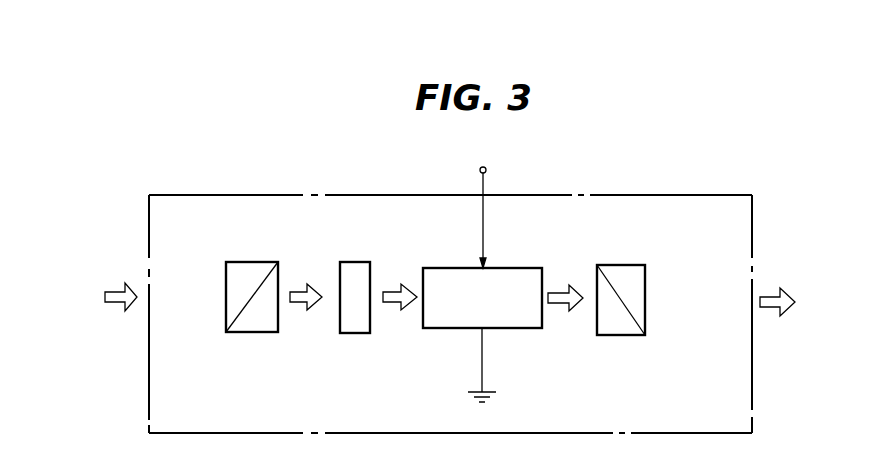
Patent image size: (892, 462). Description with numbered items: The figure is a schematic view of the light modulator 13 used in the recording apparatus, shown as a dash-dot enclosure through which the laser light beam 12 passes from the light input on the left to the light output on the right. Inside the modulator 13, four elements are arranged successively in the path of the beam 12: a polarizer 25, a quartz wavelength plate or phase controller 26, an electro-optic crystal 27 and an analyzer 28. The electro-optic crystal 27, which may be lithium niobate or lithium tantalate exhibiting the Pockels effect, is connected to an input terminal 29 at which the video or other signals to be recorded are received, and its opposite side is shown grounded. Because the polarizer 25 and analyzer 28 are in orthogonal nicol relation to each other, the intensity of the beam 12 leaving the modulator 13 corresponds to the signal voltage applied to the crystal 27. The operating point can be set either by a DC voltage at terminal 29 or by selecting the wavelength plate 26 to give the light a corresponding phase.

The laser light beam 12 is at (865, 287).
The light modulator 13 is at (441, 188).
The polarizer 25 is at (226, 332).
The quartz wavelength plate 26 is at (393, 258).
The electro-optic crystal 27 is at (503, 318).
The analyzer 28 is at (678, 235).
The input terminal 29 is at (486, 169).